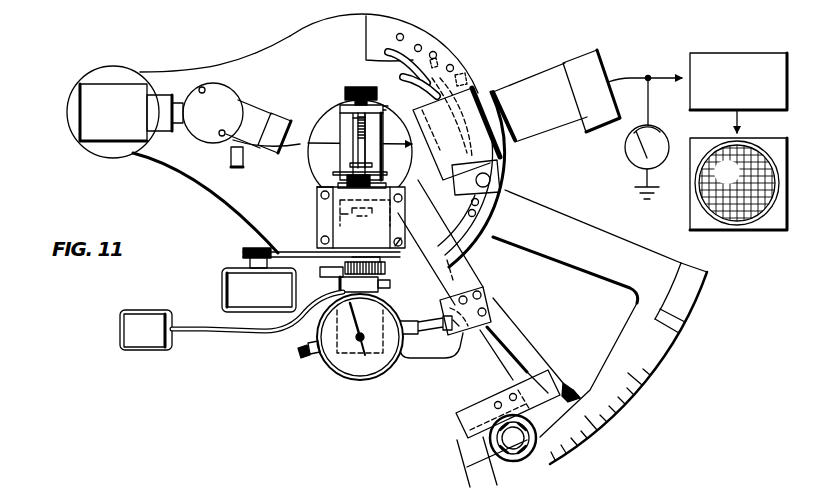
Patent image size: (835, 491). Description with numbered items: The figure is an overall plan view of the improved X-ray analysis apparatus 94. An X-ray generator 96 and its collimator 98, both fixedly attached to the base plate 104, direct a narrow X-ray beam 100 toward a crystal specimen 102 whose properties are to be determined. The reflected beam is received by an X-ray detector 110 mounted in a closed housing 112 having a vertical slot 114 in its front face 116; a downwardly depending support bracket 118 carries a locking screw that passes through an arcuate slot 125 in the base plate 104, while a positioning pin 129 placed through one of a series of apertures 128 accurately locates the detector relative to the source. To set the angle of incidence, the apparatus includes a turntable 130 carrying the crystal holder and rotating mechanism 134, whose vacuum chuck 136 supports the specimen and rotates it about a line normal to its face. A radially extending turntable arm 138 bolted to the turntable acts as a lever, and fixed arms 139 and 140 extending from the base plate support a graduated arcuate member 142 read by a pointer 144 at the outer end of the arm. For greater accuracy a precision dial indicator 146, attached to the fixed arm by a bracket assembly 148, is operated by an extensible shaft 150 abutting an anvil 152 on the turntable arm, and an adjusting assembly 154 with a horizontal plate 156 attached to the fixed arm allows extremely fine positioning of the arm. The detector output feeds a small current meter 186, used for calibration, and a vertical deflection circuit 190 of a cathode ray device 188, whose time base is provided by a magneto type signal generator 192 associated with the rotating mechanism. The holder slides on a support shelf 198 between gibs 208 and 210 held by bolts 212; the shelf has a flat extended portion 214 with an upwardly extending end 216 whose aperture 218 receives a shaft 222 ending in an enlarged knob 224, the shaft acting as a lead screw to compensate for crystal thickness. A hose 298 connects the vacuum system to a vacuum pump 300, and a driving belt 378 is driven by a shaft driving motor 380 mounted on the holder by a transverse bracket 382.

The X-ray analysis apparatus 94 is at (230, 182).
The X-ray generator 96 is at (87, 98).
The collimator 98 is at (250, 108).
The X-ray beam 100 is at (300, 146).
The crystal specimen 102 is at (350, 165).
The base plate 104 is at (182, 160).
The X-ray detector 110 is at (530, 98).
The detector housing 112 is at (480, 148).
The vertical slot 114 is at (451, 129).
The front face 116 is at (417, 88).
The support bracket 118 is at (492, 172).
The arcuate slot 125 is at (413, 47).
The apertures 128 is at (483, 62).
The positioning pin 129 is at (507, 182).
The turntable 130 is at (352, 115).
The crystal holder and rotating mechanism 134 is at (338, 222).
The vacuum chuck 136 is at (378, 157).
The turntable arm 138 is at (513, 327).
The fixed arm 139 is at (490, 380).
The fixed arm 140 is at (587, 313).
The graduated arcuate member 142 is at (617, 397).
The pointer 144 is at (576, 388).
The precision dial indicator 146 is at (342, 377).
The bracket assembly 148 is at (412, 347).
The extensible shaft 150 is at (432, 356).
The anvil 152 is at (486, 300).
The adjusting assembly 154 is at (543, 458).
The horizontal plate 156 is at (467, 420).
The current meter 186 is at (632, 163).
The cathode ray device 188 is at (775, 155).
The vertical deflection circuit 190 is at (770, 62).
The magneto type signal generator 192 is at (384, 290).
The support shelf 198 is at (317, 185).
The gib 208 is at (405, 220).
The gib 210 is at (317, 235).
The bolts 212 is at (321, 196).
The flat extended portion 214 is at (356, 137).
The upwardly extending end 216 is at (347, 105).
The aperture 218 is at (380, 103).
The shaft 222 is at (358, 143).
The enlarged knob 224 is at (362, 87).
The hose 298 is at (212, 337).
The vacuum pump 300 is at (148, 348).
The driving belt 378 is at (240, 250).
The shaft driving motor 380 is at (223, 273).
The transverse bracket 382 is at (307, 296).